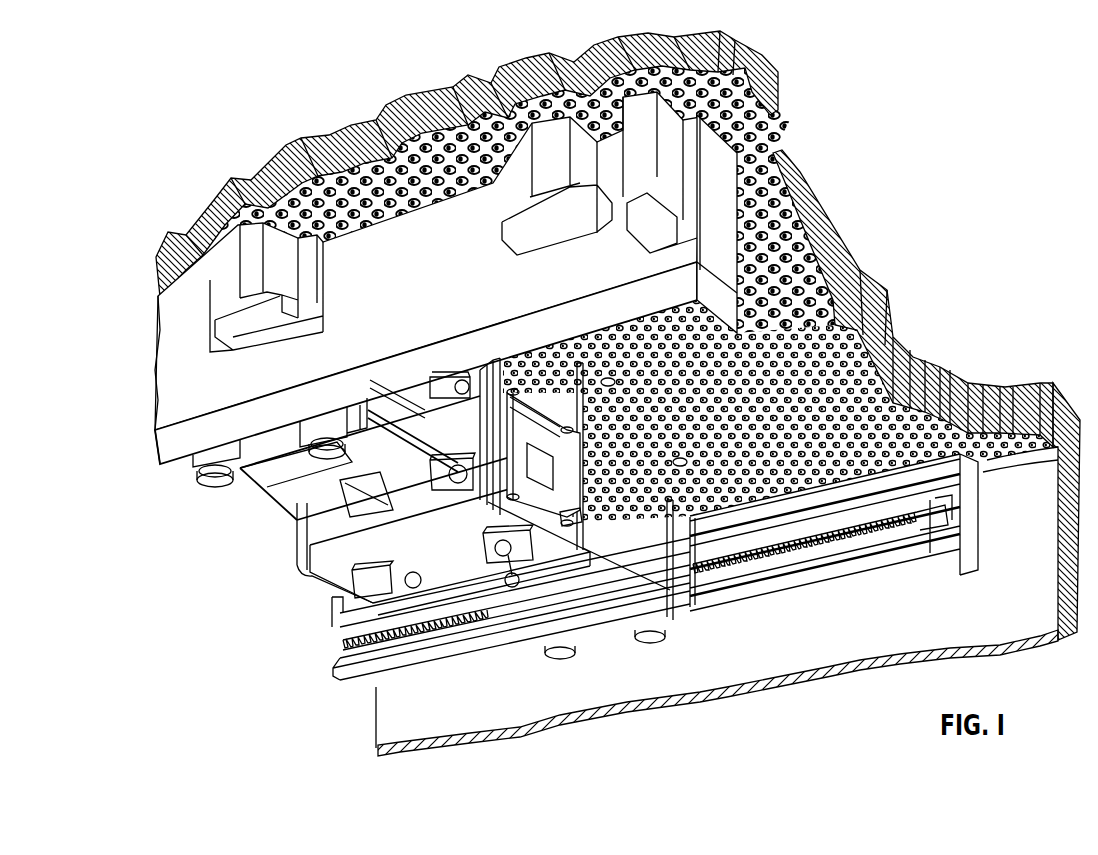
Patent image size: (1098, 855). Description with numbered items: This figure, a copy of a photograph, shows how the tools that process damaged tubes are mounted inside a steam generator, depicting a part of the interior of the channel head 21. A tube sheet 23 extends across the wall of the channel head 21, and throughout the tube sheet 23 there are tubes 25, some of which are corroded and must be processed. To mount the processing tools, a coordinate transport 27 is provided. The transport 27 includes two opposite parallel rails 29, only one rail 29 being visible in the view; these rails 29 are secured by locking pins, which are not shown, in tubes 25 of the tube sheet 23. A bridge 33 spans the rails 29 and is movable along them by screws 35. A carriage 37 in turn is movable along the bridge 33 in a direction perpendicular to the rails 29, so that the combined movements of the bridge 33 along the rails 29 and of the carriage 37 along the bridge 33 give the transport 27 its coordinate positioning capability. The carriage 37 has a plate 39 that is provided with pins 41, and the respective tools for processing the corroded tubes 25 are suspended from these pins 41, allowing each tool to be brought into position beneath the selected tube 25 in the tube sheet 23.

The channel head 21 is at (867, 638).
The tube sheet 23 is at (880, 360).
The tubes 25 is at (768, 140).
The coordinate transport 27 is at (275, 559).
The rail 29 is at (357, 683).
The bridge 33 is at (668, 612).
The screws 35 is at (795, 548).
The carriage 37 is at (449, 559).
The plate 39 is at (537, 470).
The pins 41 is at (573, 514).